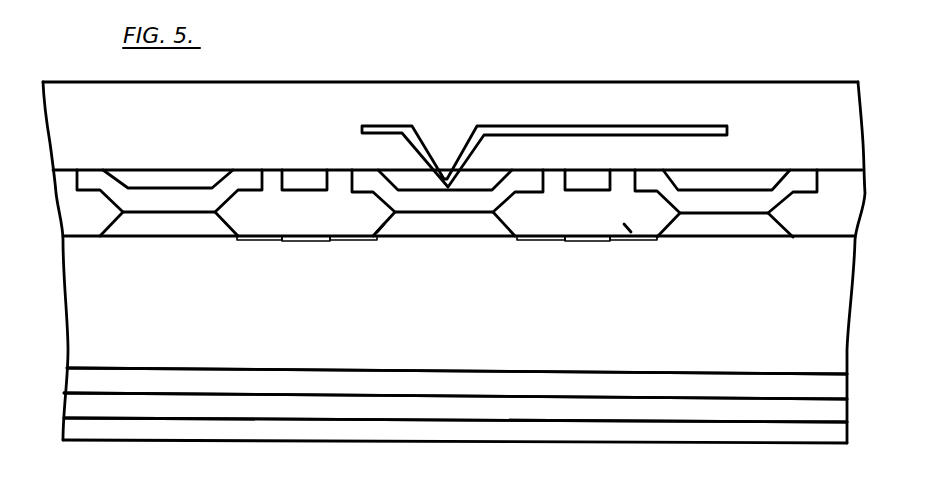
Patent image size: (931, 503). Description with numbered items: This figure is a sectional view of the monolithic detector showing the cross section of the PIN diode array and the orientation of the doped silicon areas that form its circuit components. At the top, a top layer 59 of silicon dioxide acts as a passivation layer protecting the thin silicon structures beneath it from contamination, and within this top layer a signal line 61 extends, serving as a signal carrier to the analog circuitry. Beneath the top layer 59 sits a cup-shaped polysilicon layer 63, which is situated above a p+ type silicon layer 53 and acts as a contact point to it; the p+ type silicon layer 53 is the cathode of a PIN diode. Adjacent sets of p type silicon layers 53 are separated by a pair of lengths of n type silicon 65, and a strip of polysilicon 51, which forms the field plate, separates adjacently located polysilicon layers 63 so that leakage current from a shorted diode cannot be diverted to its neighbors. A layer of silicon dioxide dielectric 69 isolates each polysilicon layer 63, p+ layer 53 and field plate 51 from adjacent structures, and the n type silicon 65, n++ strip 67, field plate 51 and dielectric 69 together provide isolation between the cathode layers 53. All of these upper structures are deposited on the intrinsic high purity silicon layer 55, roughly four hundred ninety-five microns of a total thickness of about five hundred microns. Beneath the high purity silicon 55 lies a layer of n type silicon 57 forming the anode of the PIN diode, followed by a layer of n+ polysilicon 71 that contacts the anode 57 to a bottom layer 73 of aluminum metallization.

The field plate 51 is at (312, 190).
The p+ type silicon layer 53 is at (153, 227).
The high purity silicon layer 55 is at (459, 342).
The n type silicon layer 57 is at (337, 389).
The top layer 59 is at (263, 84).
The signal line 61 is at (500, 127).
The cup-shaped polysilicon layer 63 is at (140, 197).
The n type silicon 65 is at (245, 242).
The n++ strip 67 is at (300, 243).
The silicon dioxide dielectric 69 is at (378, 226).
The n+ polysilicon layer 71 is at (428, 412).
The aluminum metallization layer 73 is at (550, 433).